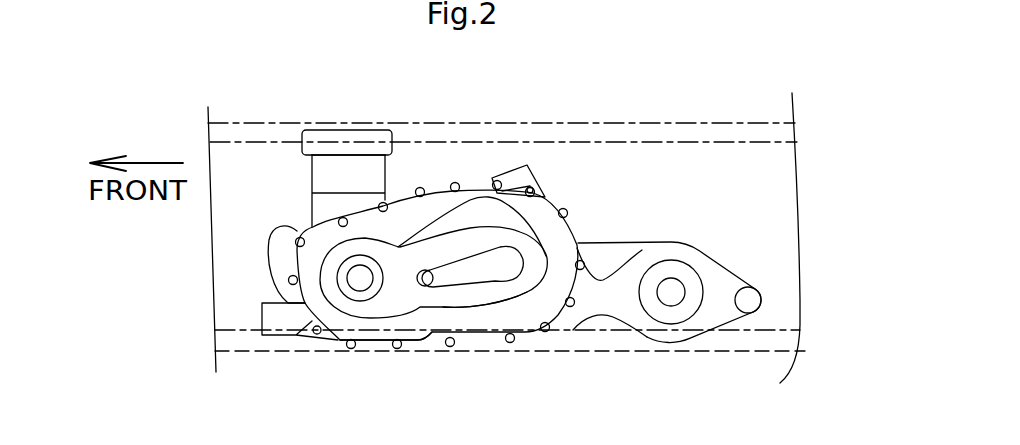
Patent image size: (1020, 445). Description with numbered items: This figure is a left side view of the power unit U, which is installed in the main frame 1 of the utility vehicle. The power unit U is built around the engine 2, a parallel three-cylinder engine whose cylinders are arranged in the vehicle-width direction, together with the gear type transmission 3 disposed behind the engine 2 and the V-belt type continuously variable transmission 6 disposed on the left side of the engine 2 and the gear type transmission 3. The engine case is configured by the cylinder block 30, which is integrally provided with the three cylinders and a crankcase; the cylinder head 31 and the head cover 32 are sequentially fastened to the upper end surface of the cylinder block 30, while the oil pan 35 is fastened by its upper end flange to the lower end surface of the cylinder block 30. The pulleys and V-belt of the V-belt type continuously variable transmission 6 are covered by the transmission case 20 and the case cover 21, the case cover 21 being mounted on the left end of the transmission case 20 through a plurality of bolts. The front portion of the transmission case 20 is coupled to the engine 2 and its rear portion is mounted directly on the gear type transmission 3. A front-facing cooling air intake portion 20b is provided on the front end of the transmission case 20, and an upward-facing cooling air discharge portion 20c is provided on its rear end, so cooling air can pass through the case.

The main frame 1 is at (640, 140).
The engine 2 is at (275, 192).
The gear type transmission 3 is at (637, 232).
The V-belt type continuously variable transmission 6 is at (230, 265).
The transmission case 20 is at (280, 277).
The cooling air intake portion 20b is at (279, 323).
The cooling air discharge portion 20c is at (532, 190).
The case cover 21 is at (527, 297).
The cylinder block 30 is at (333, 210).
The cylinder head 31 is at (333, 176).
The head cover 32 is at (328, 135).
The oil pan 35 is at (373, 340).
The power unit U is at (487, 167).